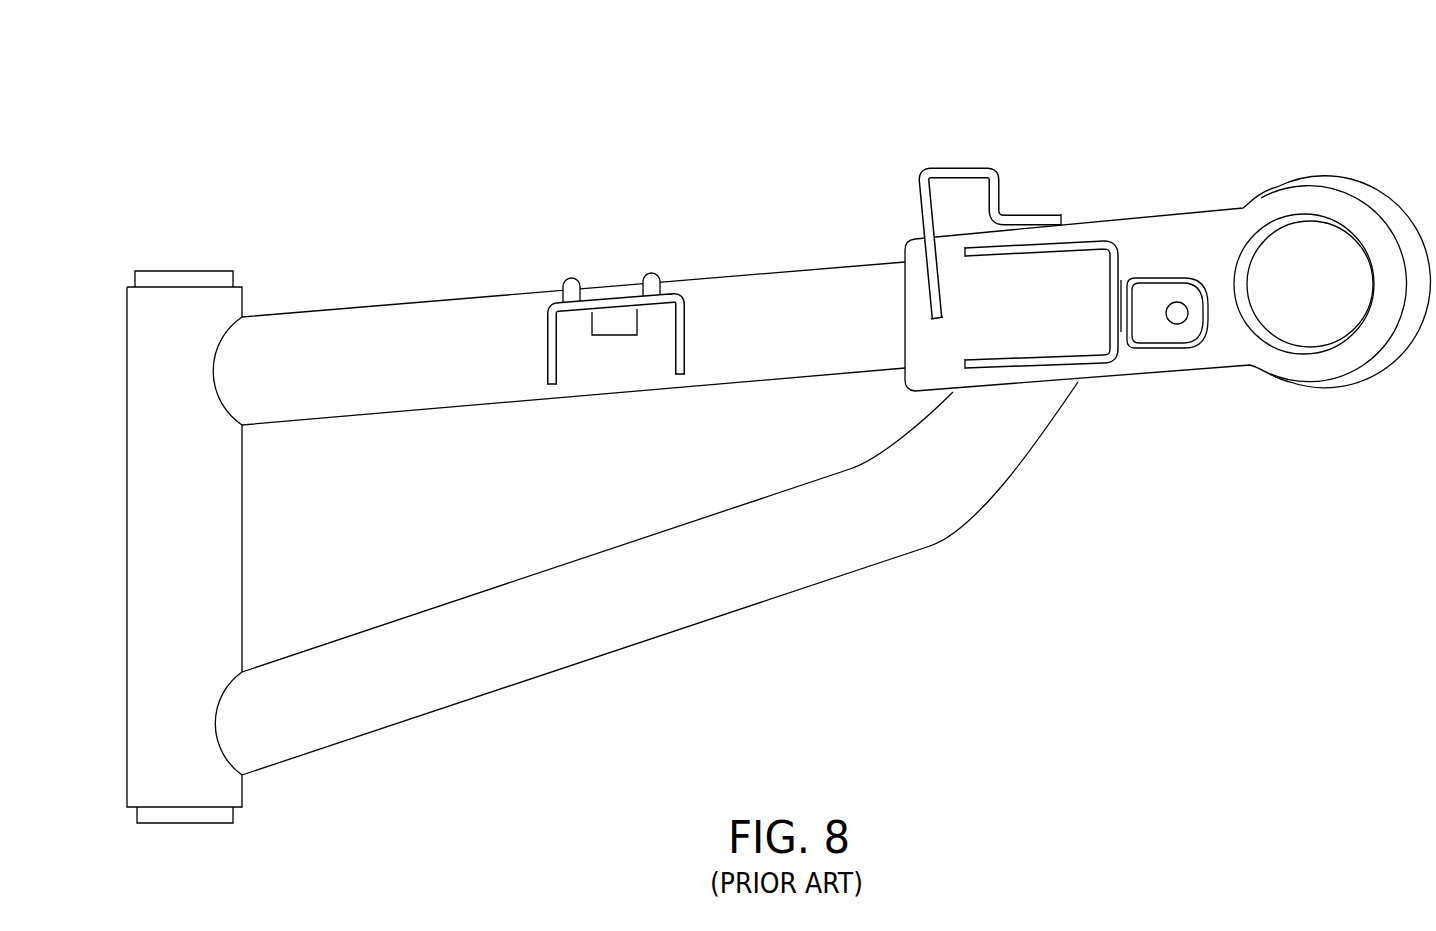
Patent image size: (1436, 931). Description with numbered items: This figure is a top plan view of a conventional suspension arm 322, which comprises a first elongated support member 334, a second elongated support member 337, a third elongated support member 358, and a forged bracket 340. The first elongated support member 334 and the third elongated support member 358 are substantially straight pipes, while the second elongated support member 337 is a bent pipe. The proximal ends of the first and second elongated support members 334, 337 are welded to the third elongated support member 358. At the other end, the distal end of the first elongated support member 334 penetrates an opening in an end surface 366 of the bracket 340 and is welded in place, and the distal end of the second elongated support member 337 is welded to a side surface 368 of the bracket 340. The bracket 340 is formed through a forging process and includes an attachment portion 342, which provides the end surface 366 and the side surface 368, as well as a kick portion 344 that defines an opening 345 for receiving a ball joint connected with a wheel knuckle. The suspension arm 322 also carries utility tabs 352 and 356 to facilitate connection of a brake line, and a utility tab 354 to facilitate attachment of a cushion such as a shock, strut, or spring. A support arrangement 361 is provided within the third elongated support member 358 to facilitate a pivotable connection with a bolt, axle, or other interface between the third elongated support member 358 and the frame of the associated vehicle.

The suspension arm 322 is at (778, 462).
The first elongated support member 334 is at (559, 297).
The second elongated support member 337 is at (646, 582).
The forged bracket 340 is at (1128, 282).
The attachment portion 342 is at (1058, 344).
The kick portion 344 is at (1332, 346).
The opening 345 is at (1246, 292).
The utility tab 352 is at (616, 299).
The utility tab 354 is at (1056, 257).
The utility tab 356 is at (957, 145).
The third elongated support member 358 is at (259, 578).
The support arrangement 361 is at (209, 823).
The end surface 366 is at (912, 387).
The side surface 368 is at (1194, 372).